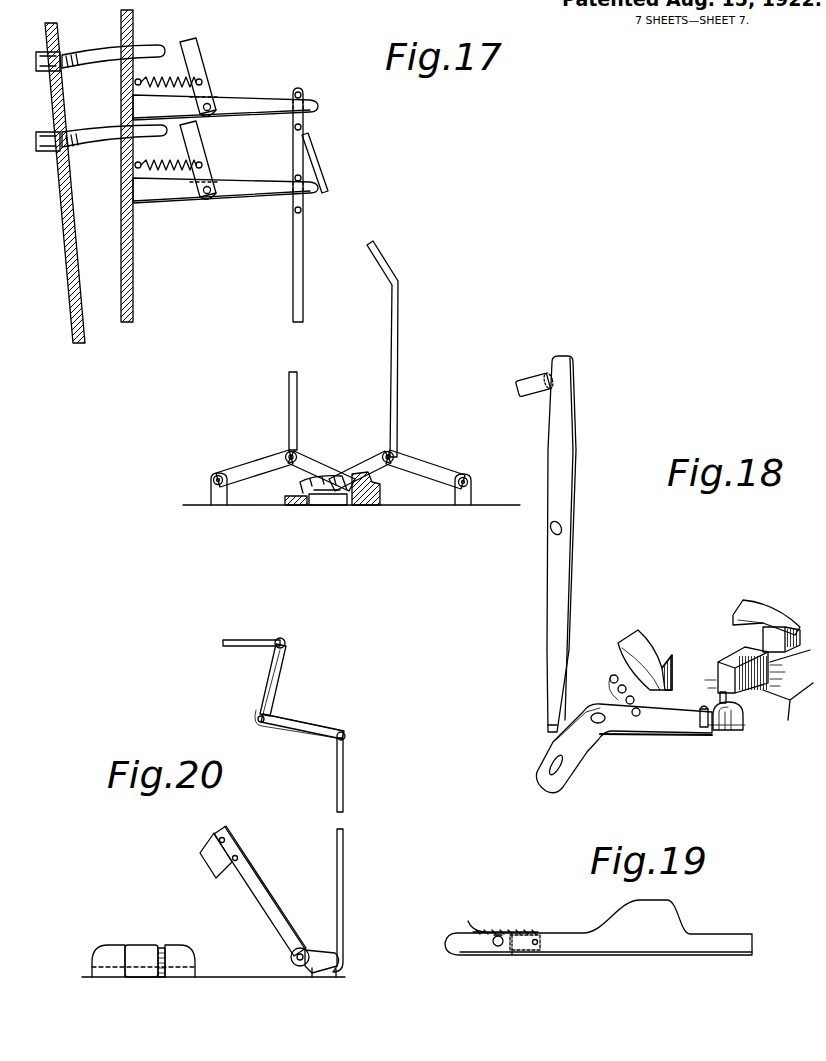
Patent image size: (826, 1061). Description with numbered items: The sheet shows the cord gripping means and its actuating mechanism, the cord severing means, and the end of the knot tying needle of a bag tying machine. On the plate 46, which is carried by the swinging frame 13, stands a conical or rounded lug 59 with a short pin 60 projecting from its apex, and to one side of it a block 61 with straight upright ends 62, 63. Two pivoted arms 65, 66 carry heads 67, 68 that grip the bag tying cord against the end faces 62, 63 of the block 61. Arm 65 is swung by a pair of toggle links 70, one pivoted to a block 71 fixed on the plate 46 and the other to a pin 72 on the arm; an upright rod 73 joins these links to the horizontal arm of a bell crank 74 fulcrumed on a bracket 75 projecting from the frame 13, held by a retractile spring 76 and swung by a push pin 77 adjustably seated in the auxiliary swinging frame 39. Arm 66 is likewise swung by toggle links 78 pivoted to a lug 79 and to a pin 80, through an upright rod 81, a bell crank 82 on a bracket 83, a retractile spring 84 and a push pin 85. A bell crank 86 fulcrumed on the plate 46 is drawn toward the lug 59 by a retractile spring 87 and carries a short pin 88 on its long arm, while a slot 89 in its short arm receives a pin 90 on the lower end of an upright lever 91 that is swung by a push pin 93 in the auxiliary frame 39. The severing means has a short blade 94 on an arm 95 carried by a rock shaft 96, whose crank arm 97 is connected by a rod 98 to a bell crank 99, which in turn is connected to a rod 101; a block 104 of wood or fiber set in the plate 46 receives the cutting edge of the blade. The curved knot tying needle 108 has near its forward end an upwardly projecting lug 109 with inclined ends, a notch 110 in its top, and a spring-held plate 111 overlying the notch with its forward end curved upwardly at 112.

In FIG. 17, the swinging frame 13 is at (133, 274).
In FIG. 17, the auxiliary swinging frame 39 is at (68, 310).
In FIG. 20, the plate 46 is at (262, 977).
In FIG. 18, the conical lug 59 is at (728, 733).
In FIG. 18, the pin 60 is at (745, 725).
In FIG. 18, the block 61 is at (745, 650).
In FIG. 20, the block 61 is at (135, 945).
In FIG. 18, the upright end 62 is at (726, 672).
In FIG. 20, the upright end 62 is at (112, 958).
In FIG. 18, the upright end 63 is at (748, 648).
In FIG. 20, the upright end 63 is at (170, 948).
In FIG. 17, the arm 65 is at (292, 506).
In FIG. 18, the arm 65 is at (630, 638).
In FIG. 17, the arm 66 is at (372, 506).
In FIG. 18, the arm 66 is at (770, 612).
In FIG. 20, the arm 66 is at (192, 977).
In FIG. 18, the head 67 is at (672, 658).
In FIG. 20, the head 67 is at (115, 977).
In FIG. 18, the head 68 is at (785, 636).
In FIG. 20, the head 68 is at (152, 977).
In FIG. 17, the toggle links 70 is at (372, 458).
In FIG. 17, the block 71 is at (478, 488).
In FIG. 17, the pin 72 is at (337, 476).
In FIG. 17, the upright rod 73 is at (398, 318).
In FIG. 17, the bell crank 74 is at (258, 98).
In FIG. 17, the bracket 75 is at (166, 64).
In FIG. 17, the retractile spring 76 is at (178, 76).
In FIG. 17, the push pin 77 is at (92, 50).
In FIG. 17, the toggle links 78 is at (310, 455).
In FIG. 17, the lug 79 is at (205, 488).
In FIG. 17, the pin 80 is at (342, 506).
In FIG. 17, the upright rod 81 is at (292, 288).
In FIG. 17, the bell crank 82 is at (252, 196).
In FIG. 17, the bracket 83 is at (175, 200).
In FIG. 17, the retractile spring 84 is at (175, 163).
In FIG. 17, the push pin 85 is at (108, 146).
In FIG. 18, the bell crank 86 is at (640, 732).
In FIG. 18, the retractile spring 87 is at (618, 678).
In FIG. 18, the pin 88 is at (700, 724).
In FIG. 18, the slot 89 is at (548, 768).
In FIG. 18, the pin 90 is at (548, 722).
In FIG. 18, the upright lever 91 is at (553, 594).
In FIG. 17, the push pin 93 is at (529, 370).
In FIG. 20, the blade 94 is at (205, 855).
In FIG. 20, the arm 95 is at (258, 900).
In FIG. 20, the rock shaft 96 is at (300, 947).
In FIG. 20, the crank arm 97 is at (332, 974).
In FIG. 20, the rod 98 is at (344, 862).
In FIG. 20, the bell crank 99 is at (312, 720).
In FIG. 20, the rod 101 is at (236, 640).
In FIG. 18, the block 104 is at (788, 720).
In FIG. 19, the knot tying needle 108 is at (730, 956).
In FIG. 19, the lug 109 is at (688, 910).
In FIG. 19, the notch 110 is at (500, 934).
In FIG. 19, the spring-held plate 111 is at (530, 928).
In FIG. 19, the upwardly curved forward end 112 is at (472, 918).